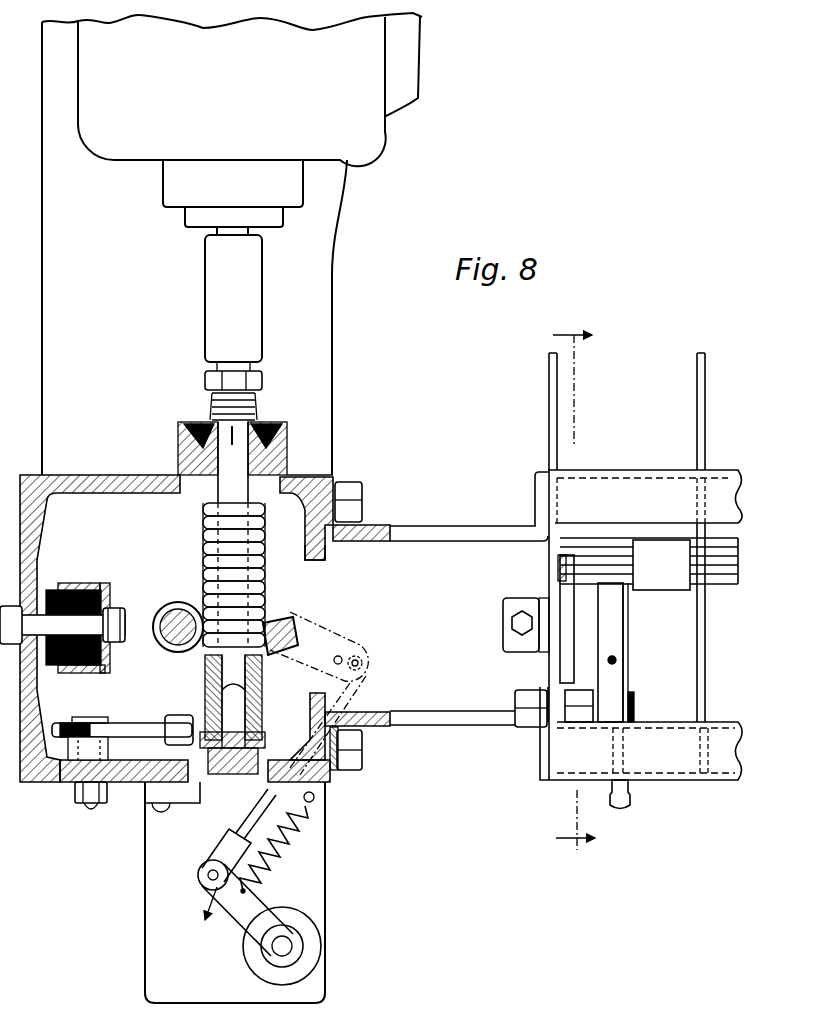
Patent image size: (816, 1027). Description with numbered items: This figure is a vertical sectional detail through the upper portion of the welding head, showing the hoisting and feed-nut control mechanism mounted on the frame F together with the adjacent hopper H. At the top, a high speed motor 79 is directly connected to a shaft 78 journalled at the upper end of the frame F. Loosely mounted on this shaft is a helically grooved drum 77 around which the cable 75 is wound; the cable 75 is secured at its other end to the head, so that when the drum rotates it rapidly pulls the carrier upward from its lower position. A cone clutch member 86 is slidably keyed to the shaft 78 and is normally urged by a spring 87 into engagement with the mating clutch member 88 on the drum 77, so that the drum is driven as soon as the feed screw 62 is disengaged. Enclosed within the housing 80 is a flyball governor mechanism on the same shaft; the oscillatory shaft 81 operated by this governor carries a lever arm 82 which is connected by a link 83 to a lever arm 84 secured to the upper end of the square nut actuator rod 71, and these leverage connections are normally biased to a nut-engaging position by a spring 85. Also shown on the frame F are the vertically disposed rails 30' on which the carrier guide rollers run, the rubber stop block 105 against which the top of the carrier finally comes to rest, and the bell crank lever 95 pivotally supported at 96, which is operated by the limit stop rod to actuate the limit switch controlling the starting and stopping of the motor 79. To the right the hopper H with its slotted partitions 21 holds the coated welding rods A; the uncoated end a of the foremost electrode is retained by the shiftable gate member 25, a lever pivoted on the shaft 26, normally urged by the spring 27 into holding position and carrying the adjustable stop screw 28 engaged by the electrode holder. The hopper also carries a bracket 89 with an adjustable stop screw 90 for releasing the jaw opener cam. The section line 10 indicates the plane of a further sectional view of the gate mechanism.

The high speed motor 79 is at (137, 138).
The spring 87 is at (212, 404).
The cone clutch member 86 is at (272, 424).
The shaft 78 is at (180, 466).
The mating clutch member 88 is at (286, 452).
The frame F is at (70, 476).
The rails 30' is at (336, 556).
The helically grooved drum 77 is at (203, 541).
The cable 75 is at (207, 551).
The feed screw 62 is at (158, 641).
The stop block 105 is at (97, 585).
The bell crank lever 95 is at (137, 726).
The pivot 96 is at (90, 810).
The square rod 71 is at (282, 618).
The lever arm 84 is at (335, 630).
The housing 80 is at (156, 880).
The link 83 is at (246, 831).
The spring 85 is at (272, 866).
The lever arm 82 is at (240, 915).
The oscillatory shaft 81 is at (286, 947).
The hopper H is at (716, 458).
The slotted partitions 21 is at (712, 676).
The bracket 89 is at (520, 598).
The stop screw 90 is at (512, 623).
The coated welding rods A is at (646, 570).
The uncoated end a is at (598, 547).
The shiftable gate member 25 is at (628, 643).
The screw 28 is at (616, 662).
The shaft 26 is at (636, 706).
The spring 27 is at (631, 792).
The section line 10 is at (574, 594).